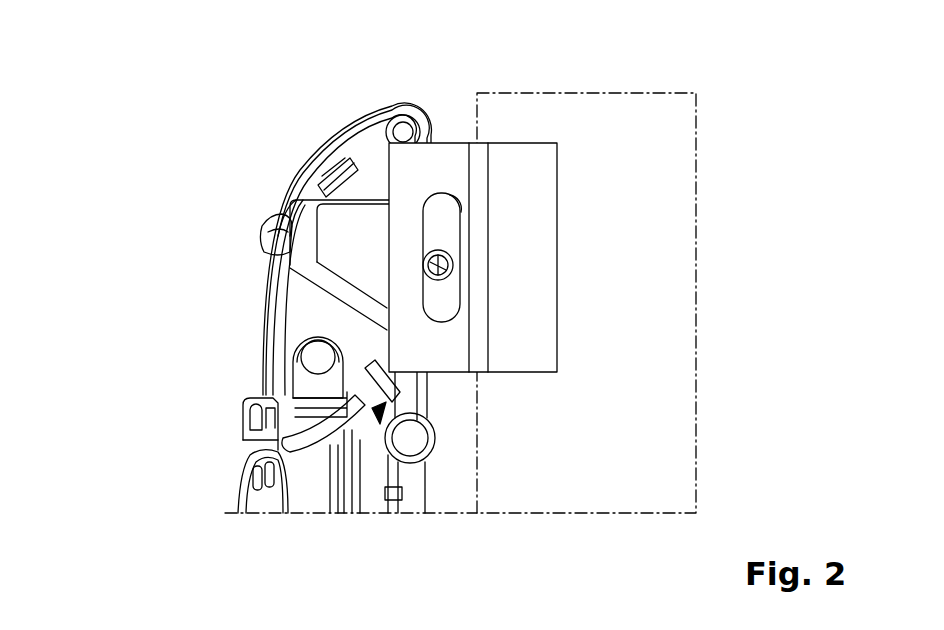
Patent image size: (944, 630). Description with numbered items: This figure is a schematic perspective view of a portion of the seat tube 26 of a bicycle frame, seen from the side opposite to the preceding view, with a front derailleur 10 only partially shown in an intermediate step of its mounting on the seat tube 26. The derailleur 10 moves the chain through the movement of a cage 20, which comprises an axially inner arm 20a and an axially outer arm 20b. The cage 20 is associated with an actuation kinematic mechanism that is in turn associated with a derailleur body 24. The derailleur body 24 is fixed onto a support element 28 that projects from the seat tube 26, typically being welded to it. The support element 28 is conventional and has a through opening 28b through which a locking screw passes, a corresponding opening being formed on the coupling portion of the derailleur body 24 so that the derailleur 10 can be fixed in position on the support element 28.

The front derailleur 10 is at (296, 256).
The cage 20 is at (296, 438).
The axially inner arm 20a is at (402, 472).
The axially outer arm 20b is at (253, 478).
The derailleur body 24 is at (347, 208).
The seat tube 26 is at (620, 217).
The support element 28 is at (537, 238).
The through opening 28b is at (438, 302).